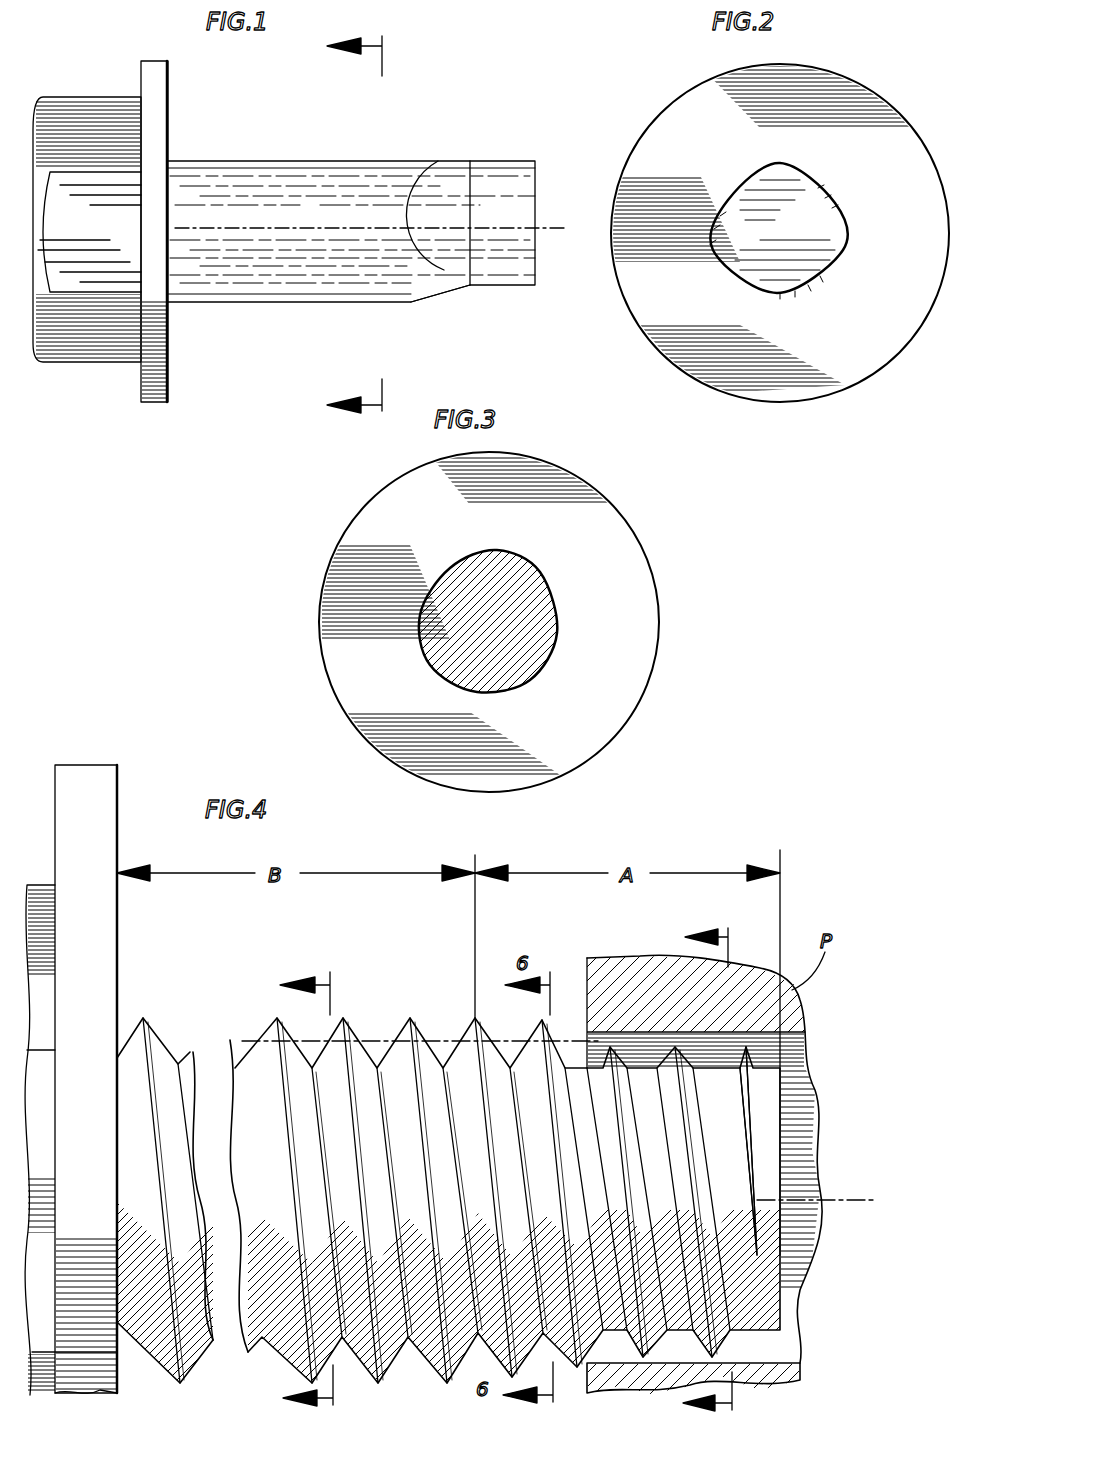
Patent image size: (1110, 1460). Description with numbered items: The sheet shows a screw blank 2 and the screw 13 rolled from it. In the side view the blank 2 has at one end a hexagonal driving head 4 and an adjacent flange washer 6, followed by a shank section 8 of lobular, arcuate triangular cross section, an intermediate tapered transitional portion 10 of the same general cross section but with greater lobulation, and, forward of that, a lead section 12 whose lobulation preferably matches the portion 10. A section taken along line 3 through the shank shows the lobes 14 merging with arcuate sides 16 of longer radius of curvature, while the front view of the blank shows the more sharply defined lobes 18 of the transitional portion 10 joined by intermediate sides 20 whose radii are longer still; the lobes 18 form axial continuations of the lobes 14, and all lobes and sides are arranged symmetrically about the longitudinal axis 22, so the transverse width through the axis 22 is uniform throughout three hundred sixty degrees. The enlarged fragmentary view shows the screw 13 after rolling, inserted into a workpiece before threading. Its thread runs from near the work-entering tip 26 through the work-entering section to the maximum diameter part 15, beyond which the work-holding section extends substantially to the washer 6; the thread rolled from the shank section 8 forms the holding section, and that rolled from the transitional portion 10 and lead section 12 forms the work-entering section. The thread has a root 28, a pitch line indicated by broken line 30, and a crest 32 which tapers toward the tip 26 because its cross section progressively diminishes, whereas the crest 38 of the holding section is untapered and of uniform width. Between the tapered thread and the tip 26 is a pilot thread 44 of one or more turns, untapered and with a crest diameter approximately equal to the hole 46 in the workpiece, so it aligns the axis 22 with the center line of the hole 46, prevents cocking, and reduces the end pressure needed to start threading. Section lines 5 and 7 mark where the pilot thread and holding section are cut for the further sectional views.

In FIG. 1, the screw blank 2 is at (235, 304).
In FIG. 1, the section line 3- 3 is at (354, 229).
In FIG. 1, the hexagonal driving head 4 is at (100, 363).
In FIG. 4, the hexagonal driving head 4 is at (35, 885).
In FIG. 4, the section line 5- 5 is at (691, 1170).
In FIG. 1, the flange washer 6 is at (164, 404).
In FIG. 2, the flange washer 6 is at (893, 364).
In FIG. 3, the flange washer 6 is at (648, 556).
In FIG. 4, the flange washer 6 is at (74, 765).
In FIG. 4, the section line 7- 7 is at (297, 1178).
In FIG. 1, the shank section 8 is at (236, 161).
In FIG. 2, the shank section 8 is at (760, 170).
In FIG. 1, the tapered transitional portion 10 is at (446, 291).
In FIG. 2, the tapered transitional portion 10 is at (805, 290).
In FIG. 1, the lead section 12 is at (502, 161).
In FIG. 4, the screw 13 is at (202, 1015).
In FIG. 1, the lobes 14 is at (296, 161).
In FIG. 3, the lobes 14 is at (490, 550).
In FIG. 4, the maximum diameter part 15 is at (473, 1012).
In FIG. 2, the arcuate sides 16 is at (845, 212).
In FIG. 3, the arcuate sides 16 is at (548, 575).
In FIG. 1, the lobes 18 is at (440, 162).
In FIG. 2, the lobes 18 is at (775, 163).
In FIG. 2, the intermediate sides 20 is at (715, 195).
In FIG. 1, the longitudinal axis 22 is at (560, 230).
In FIG. 4, the longitudinal axis 22 is at (852, 1200).
In FIG. 4, the work-entering tip 26 is at (815, 1060).
In FIG. 4, the root 28 is at (647, 1067).
In FIG. 4, the pitch line 30 is at (497, 1040).
In FIG. 4, the crest 32 is at (546, 1018).
In FIG. 4, the crest 38 is at (345, 1018).
In FIG. 4, the pilot thread 44 is at (712, 1240).
In FIG. 4, the hole 46 is at (800, 1376).